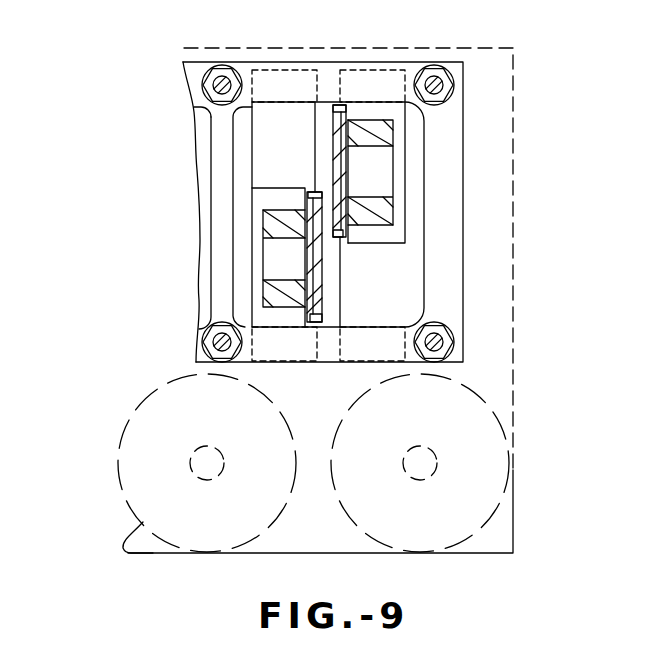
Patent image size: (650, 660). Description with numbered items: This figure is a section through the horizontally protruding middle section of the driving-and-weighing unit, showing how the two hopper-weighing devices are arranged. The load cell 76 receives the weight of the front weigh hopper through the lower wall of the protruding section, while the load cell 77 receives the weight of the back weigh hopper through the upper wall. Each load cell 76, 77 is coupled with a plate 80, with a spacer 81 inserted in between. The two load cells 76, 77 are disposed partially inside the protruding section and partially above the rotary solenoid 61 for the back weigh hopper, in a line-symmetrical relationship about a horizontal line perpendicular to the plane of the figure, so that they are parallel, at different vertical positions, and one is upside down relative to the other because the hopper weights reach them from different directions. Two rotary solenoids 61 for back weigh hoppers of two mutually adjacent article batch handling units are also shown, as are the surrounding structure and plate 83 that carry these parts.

The rotary solenoid 61 is at (128, 428).
The load cell 76 is at (284, 297).
The load cell 77 is at (386, 136).
The plate 80 is at (335, 163).
The spacer 81 is at (342, 110).
The mounting plate 83 is at (262, 122).